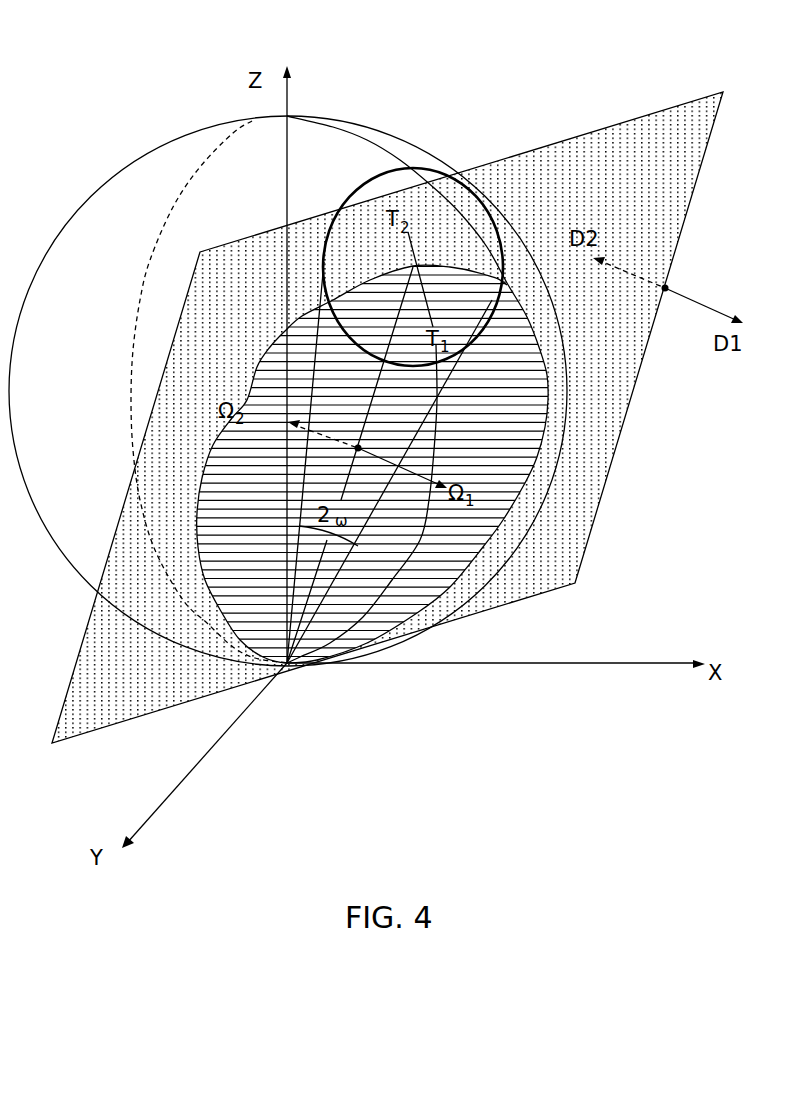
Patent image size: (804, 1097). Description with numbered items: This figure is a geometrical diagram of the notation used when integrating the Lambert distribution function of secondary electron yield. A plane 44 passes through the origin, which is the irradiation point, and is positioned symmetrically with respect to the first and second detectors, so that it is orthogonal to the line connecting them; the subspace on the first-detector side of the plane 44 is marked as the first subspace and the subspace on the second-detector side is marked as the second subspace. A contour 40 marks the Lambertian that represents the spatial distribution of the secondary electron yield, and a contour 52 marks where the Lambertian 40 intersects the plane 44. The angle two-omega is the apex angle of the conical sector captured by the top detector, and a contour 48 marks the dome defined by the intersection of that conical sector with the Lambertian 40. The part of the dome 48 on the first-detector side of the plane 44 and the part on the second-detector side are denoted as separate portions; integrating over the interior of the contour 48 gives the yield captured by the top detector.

The contour of the Lambertian 40 is at (149, 152).
The plane 44 is at (585, 134).
The dome contour 48 is at (394, 169).
The intersection contour 52 is at (523, 483).